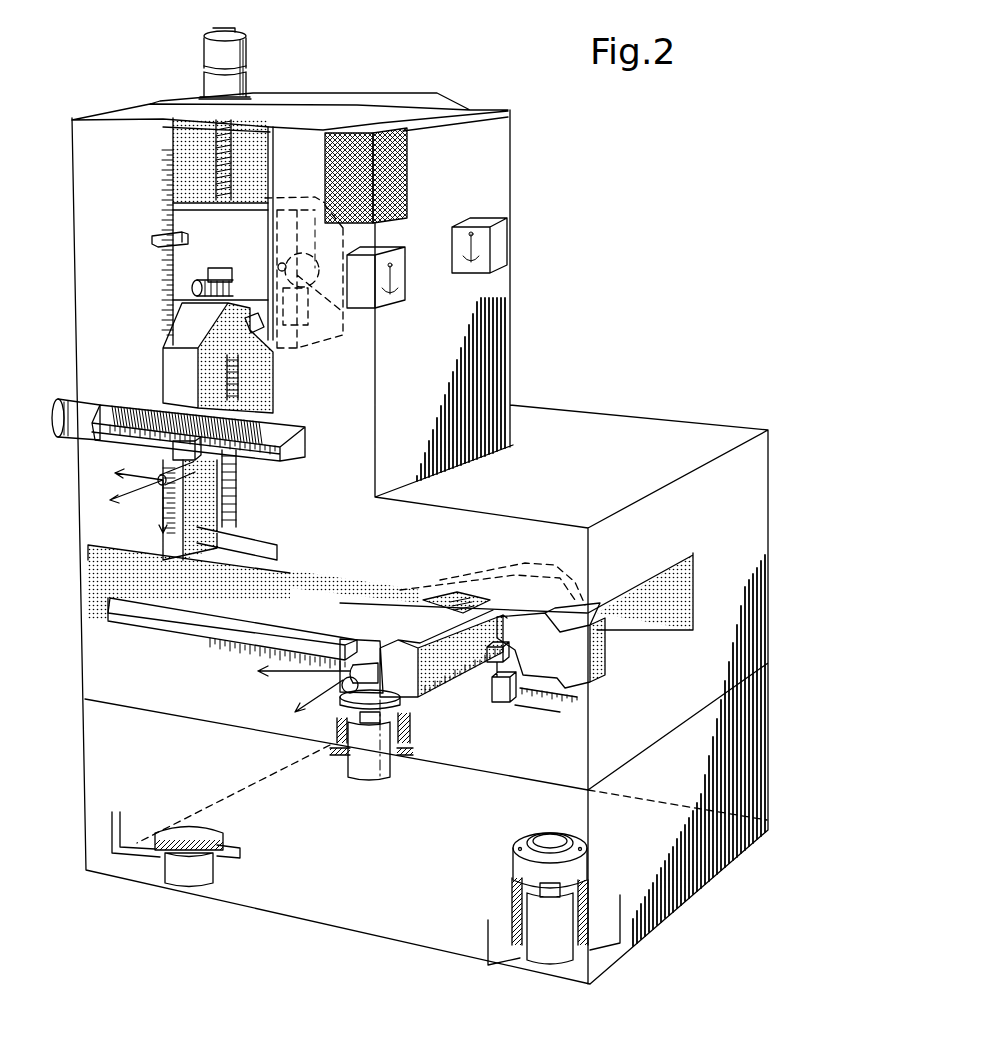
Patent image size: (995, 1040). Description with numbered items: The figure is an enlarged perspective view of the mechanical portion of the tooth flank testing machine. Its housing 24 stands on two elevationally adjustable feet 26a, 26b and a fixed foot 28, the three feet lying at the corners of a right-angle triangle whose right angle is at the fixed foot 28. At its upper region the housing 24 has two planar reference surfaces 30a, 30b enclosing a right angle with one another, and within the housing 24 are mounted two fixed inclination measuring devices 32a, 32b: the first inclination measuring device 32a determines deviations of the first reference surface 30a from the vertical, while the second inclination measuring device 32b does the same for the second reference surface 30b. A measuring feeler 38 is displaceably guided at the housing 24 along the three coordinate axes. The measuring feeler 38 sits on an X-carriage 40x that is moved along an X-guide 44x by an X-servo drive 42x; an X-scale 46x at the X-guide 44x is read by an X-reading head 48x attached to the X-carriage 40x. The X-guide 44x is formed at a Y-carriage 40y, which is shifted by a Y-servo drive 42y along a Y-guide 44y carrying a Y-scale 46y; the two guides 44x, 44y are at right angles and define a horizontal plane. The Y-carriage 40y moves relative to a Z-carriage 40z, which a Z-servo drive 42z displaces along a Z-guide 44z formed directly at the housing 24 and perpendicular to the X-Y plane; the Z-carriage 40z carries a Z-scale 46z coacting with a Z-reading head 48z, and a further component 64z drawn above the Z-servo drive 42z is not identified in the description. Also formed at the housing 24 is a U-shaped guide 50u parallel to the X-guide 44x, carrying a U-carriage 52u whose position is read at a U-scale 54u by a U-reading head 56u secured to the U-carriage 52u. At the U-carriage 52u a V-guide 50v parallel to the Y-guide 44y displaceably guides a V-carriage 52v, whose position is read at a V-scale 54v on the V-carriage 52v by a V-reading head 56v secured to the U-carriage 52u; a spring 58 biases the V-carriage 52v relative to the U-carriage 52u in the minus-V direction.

The housing 24 is at (508, 82).
The elevationally adjustable foot 26a is at (368, 772).
The elevationally adjustable foot 26b is at (540, 952).
The fixed foot 28 is at (178, 882).
The first reference surface 30a is at (355, 140).
The second reference surface 30b is at (407, 166).
The first inclination measuring device 32a is at (405, 283).
The second inclination measuring device 32b is at (507, 240).
The measuring feeler 38 is at (163, 480).
The X-carriage 40x is at (150, 443).
The Y-carriage 40y is at (170, 352).
The Z-carriage 40z is at (188, 262).
The X-servo drive 42x is at (82, 408).
The Y-servo drive 42y is at (343, 312).
The Z-servo drive 42z is at (200, 86).
The X-guide 44x is at (305, 433).
The Y-guide 44y is at (262, 325).
The Z-guide 44z is at (190, 143).
The X-scale 46x is at (260, 458).
The Y-scale 46y is at (250, 330).
The Z-scale 46z is at (170, 188).
The X-reading head 48x is at (228, 460).
The Z-reading head 48z is at (152, 239).
The U-shaped guide 50u is at (165, 598).
The V-guide 50v is at (600, 572).
The U-carriage 52u is at (575, 640).
The V-carriage 52v is at (400, 600).
The U-scale 54u is at (225, 650).
The V-scale 54v is at (460, 685).
The U-reading head 56u is at (520, 710).
The V-reading head 56v is at (500, 703).
The spring 58 is at (433, 592).
The Z encoder 64z is at (200, 52).